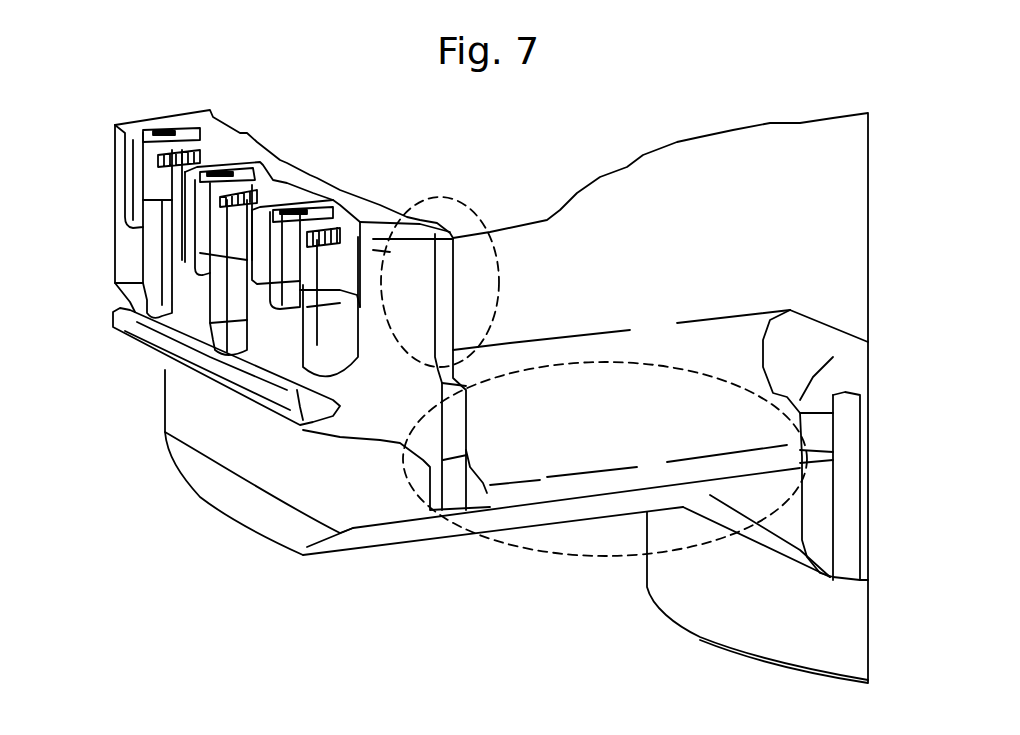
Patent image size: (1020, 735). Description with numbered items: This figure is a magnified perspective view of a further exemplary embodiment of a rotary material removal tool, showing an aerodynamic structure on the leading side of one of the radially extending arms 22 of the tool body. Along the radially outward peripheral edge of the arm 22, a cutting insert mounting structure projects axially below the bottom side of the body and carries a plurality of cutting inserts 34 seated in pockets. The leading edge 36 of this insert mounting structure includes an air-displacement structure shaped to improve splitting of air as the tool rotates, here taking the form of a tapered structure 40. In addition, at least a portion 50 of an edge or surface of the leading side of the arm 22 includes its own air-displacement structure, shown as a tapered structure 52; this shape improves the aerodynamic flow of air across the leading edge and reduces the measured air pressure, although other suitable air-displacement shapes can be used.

The arm 22 is at (545, 257).
The cutting insert 34 is at (133, 143).
The leading edge 36 is at (448, 197).
The tapered structure 40 is at (417, 277).
The portion 50 is at (517, 560).
The tapered structure 52 is at (593, 440).